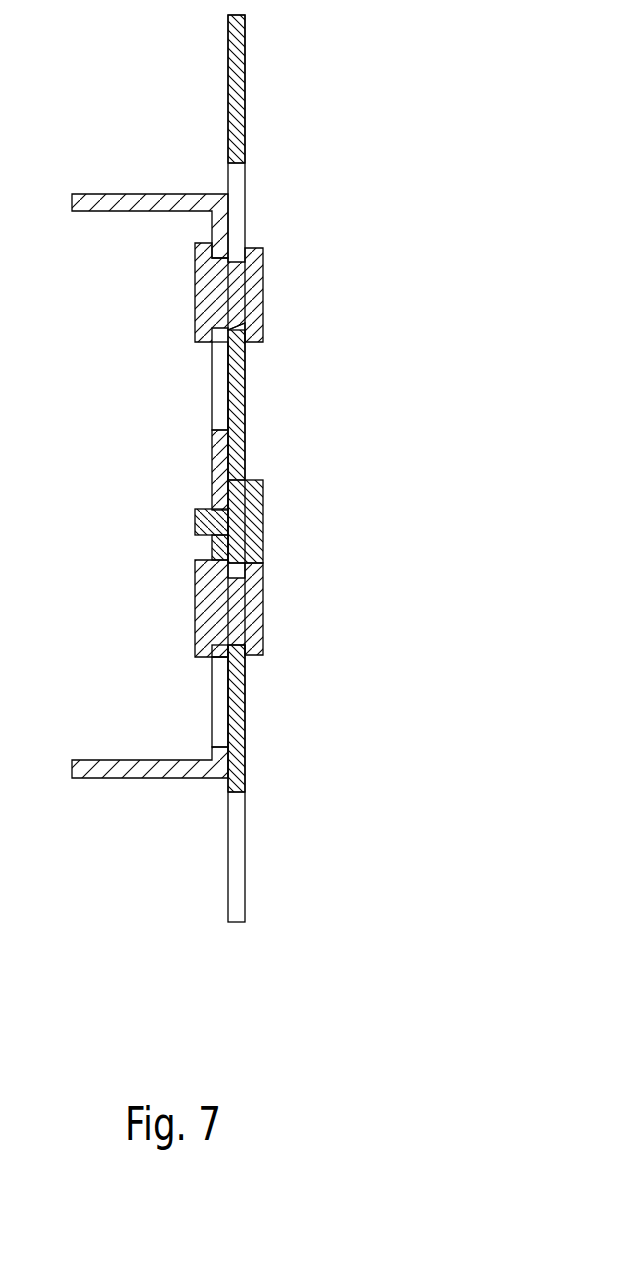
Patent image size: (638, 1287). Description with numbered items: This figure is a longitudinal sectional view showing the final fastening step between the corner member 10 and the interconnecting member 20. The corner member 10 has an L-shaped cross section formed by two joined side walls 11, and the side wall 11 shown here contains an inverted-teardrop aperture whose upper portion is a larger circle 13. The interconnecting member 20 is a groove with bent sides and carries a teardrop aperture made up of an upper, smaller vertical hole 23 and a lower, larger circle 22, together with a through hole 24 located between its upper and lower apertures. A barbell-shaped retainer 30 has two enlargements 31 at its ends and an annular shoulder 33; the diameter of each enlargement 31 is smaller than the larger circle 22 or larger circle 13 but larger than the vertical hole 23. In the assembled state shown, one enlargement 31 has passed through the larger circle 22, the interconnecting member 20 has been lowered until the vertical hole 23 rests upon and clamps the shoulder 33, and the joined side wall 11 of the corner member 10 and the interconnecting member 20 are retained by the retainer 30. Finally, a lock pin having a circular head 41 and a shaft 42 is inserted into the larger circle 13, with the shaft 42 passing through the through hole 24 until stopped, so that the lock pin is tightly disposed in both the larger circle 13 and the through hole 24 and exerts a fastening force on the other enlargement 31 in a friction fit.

The corner member 10 is at (274, 781).
The side wall 11 is at (243, 42).
The larger circle 13 is at (240, 200).
The interconnecting member 20 is at (128, 778).
The larger circle 22 is at (217, 382).
The vertical hole 23 is at (215, 553).
The through hole 24 is at (212, 497).
The retainer 30 is at (275, 294).
The enlargement 31 is at (195, 588).
The annular shoulder 33 is at (216, 648).
The circular head 41 is at (263, 537).
The shaft 42 is at (195, 522).